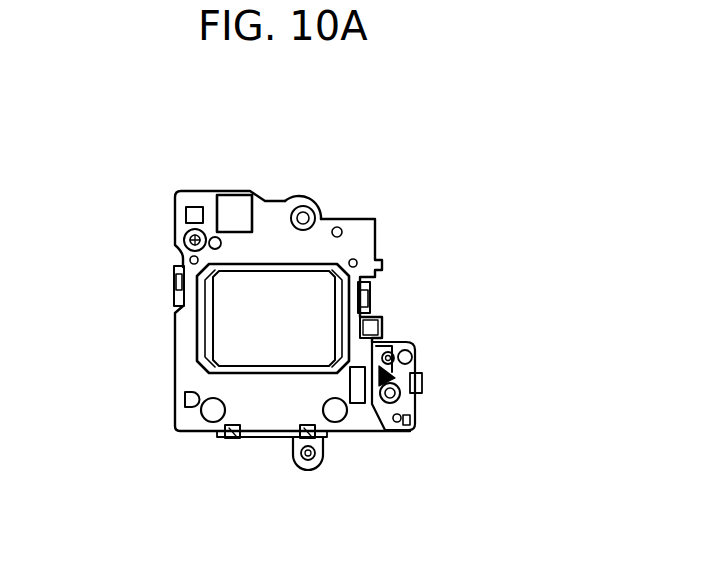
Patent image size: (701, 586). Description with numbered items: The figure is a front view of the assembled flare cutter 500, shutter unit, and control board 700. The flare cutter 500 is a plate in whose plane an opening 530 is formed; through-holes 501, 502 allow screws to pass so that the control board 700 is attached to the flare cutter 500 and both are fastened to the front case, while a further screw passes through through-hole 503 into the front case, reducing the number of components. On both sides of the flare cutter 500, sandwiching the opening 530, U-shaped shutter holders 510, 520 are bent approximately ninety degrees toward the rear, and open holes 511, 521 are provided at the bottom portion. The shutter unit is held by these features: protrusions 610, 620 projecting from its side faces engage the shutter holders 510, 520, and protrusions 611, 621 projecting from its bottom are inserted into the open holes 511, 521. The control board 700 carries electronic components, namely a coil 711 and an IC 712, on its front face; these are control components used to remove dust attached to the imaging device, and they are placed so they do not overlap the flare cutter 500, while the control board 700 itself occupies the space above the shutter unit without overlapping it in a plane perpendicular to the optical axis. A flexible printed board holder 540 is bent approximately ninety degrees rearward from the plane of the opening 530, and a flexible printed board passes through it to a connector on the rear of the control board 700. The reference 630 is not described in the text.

The flare cutter 500 is at (352, 232).
The through-hole 501 is at (175, 233).
The through-hole 502 is at (315, 211).
The through-hole 503 is at (308, 455).
The shutter holder 510 is at (370, 283).
The open hole 511 is at (330, 436).
The shutter holder 520 is at (175, 297).
The open hole 521 is at (223, 433).
The opening 530 is at (204, 330).
The flexible printed board holder 540 is at (377, 233).
The protrusion 610 is at (371, 297).
The protrusion 611 is at (325, 440).
The protrusion 620 is at (175, 282).
The protrusion 621 is at (231, 438).
The sensor opening 630 is at (205, 355).
The control board 700 is at (281, 203).
The coil 711 is at (232, 213).
The IC 712 is at (193, 214).